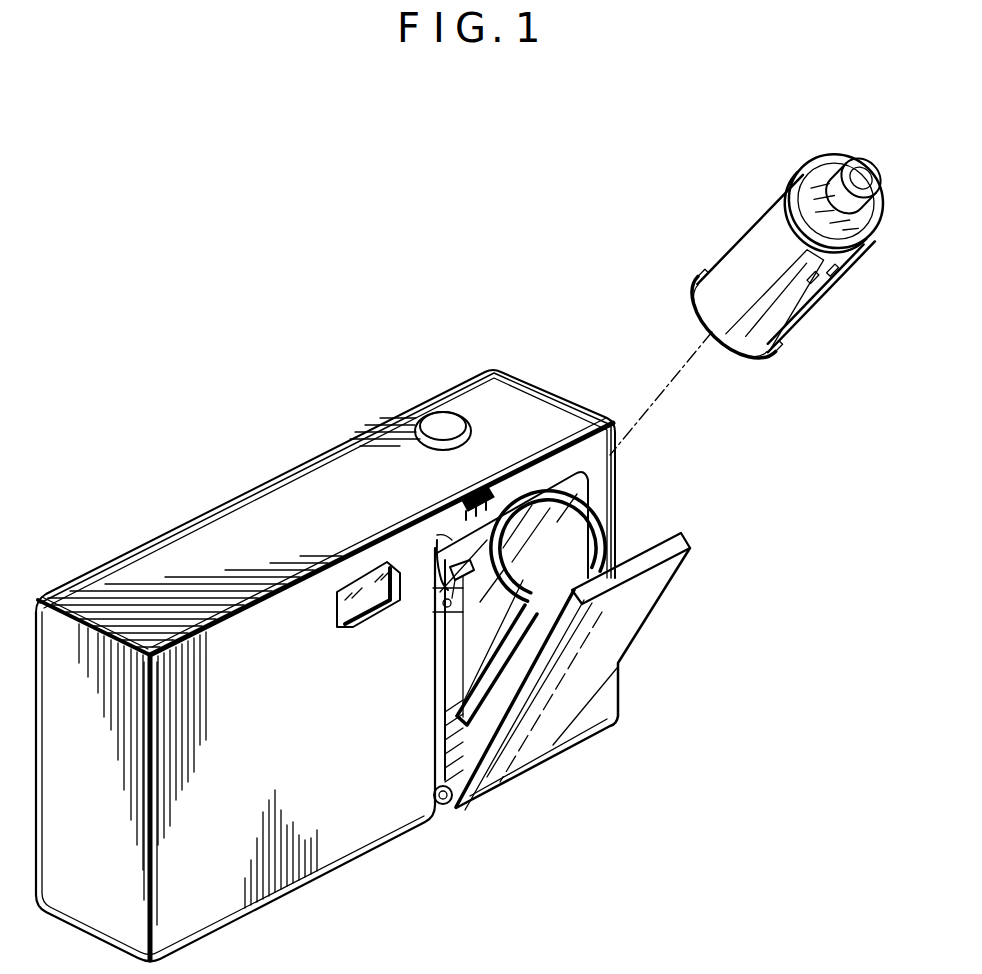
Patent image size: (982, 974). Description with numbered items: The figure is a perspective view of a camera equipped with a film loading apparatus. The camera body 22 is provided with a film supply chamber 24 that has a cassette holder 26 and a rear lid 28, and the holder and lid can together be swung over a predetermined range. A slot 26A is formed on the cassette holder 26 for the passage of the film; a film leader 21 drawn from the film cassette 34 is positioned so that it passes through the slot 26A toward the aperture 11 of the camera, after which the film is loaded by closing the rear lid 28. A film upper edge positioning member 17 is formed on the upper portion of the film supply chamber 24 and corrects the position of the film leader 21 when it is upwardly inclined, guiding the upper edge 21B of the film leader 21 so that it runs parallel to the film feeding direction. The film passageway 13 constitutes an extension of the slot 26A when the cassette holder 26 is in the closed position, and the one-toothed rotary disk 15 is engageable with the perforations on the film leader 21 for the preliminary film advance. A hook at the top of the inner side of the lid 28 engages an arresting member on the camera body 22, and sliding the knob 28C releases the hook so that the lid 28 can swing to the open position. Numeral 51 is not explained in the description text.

The aperture 11 is at (433, 692).
The film passageway 13 is at (433, 745).
The one-toothed rotary disk 15 is at (437, 553).
The film upper edge positioning member 17 is at (452, 562).
The film leader 21 is at (807, 307).
The upper edge of the film leader 21B is at (810, 263).
The camera body 22 is at (214, 533).
The film supply chamber 24 is at (548, 493).
The cassette holder 26 is at (587, 530).
The slot 26A is at (512, 658).
The rear lid 28 is at (653, 587).
The knob 28C is at (478, 493).
The film cassette 34 is at (756, 259).
The spool 51 is at (850, 157).